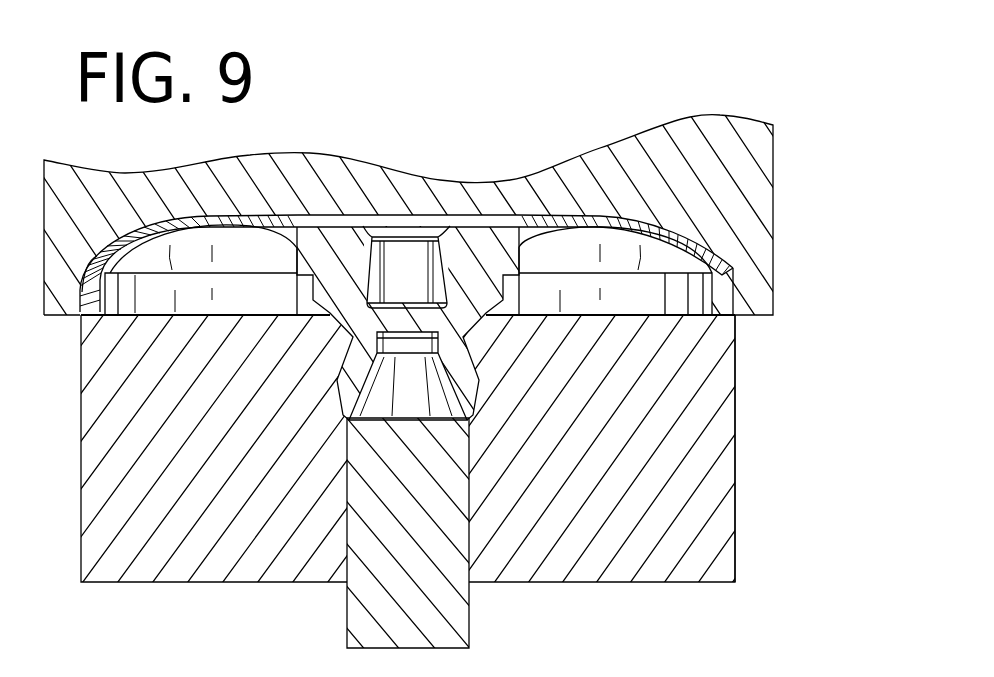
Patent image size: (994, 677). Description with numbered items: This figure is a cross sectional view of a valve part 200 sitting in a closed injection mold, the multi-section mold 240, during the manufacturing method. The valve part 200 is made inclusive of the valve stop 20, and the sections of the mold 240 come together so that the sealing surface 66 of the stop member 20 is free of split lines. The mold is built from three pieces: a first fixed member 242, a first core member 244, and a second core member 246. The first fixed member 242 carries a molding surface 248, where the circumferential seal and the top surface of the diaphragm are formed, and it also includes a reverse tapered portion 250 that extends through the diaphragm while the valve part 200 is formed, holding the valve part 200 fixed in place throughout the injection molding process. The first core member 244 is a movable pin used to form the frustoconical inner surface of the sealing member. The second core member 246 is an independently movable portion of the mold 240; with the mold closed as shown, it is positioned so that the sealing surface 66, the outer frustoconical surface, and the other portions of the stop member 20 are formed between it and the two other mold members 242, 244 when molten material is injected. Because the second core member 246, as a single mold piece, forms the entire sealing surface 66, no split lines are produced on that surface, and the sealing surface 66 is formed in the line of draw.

The valve stop 20 is at (308, 347).
The sealing surface 66 is at (473, 408).
The valve part 200 is at (455, 203).
The mold 240 is at (763, 346).
The first fixed member 242 is at (59, 247).
The first core member 244 is at (347, 628).
The second core member 246 is at (737, 509).
The molding surface 248 is at (740, 222).
The reverse tapered portion 250 is at (400, 250).